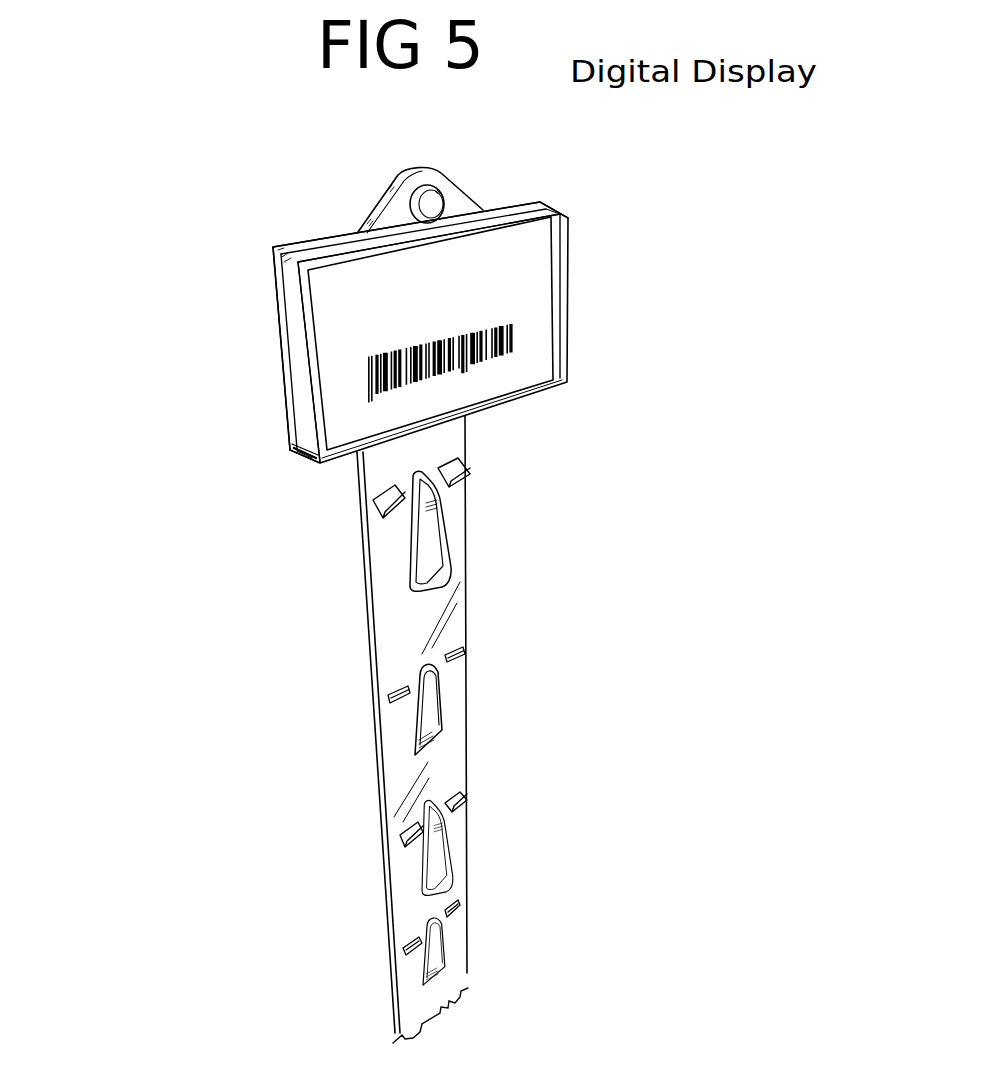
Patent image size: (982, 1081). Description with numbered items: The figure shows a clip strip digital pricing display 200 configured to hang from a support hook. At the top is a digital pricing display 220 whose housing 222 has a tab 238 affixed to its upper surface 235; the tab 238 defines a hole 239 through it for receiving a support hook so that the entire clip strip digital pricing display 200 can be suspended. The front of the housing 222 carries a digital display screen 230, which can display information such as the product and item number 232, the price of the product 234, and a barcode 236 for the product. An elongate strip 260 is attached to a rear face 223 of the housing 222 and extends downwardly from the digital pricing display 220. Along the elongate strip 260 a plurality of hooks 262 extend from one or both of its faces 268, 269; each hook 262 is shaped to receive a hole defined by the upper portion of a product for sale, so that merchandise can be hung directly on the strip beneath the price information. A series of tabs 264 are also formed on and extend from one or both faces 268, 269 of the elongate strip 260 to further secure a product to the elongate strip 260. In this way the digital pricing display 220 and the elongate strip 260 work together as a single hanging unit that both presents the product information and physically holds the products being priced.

The clip strip digital pricing display 200 is at (138, 236).
The digital display screen 230 is at (550, 235).
The digital pricing display 220 is at (278, 373).
The rear face 223 is at (278, 327).
The housing 222 is at (287, 432).
The upper surface 235 is at (513, 213).
The tab 238 is at (460, 183).
The hole 239 is at (423, 207).
The product and item number 232 is at (347, 287).
The price of the product 234 is at (550, 287).
The barcode 236 is at (513, 343).
The elongate strip 260 is at (368, 645).
The hooks 262 is at (452, 536).
The tabs 264 is at (383, 520).
The face 268 is at (396, 756).
The face 269 is at (370, 715).